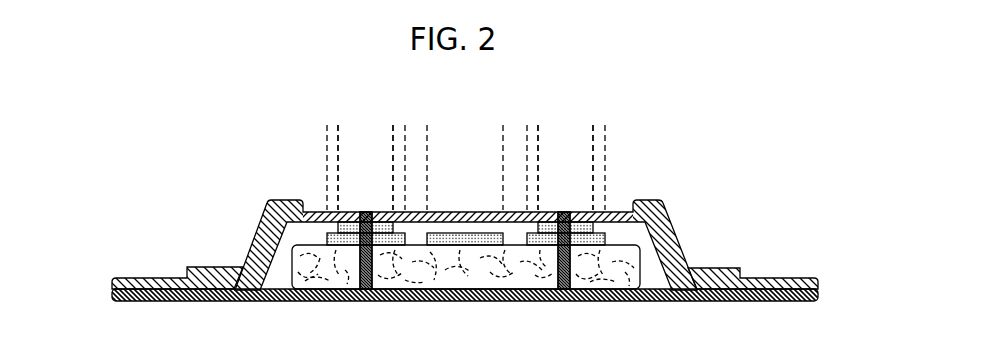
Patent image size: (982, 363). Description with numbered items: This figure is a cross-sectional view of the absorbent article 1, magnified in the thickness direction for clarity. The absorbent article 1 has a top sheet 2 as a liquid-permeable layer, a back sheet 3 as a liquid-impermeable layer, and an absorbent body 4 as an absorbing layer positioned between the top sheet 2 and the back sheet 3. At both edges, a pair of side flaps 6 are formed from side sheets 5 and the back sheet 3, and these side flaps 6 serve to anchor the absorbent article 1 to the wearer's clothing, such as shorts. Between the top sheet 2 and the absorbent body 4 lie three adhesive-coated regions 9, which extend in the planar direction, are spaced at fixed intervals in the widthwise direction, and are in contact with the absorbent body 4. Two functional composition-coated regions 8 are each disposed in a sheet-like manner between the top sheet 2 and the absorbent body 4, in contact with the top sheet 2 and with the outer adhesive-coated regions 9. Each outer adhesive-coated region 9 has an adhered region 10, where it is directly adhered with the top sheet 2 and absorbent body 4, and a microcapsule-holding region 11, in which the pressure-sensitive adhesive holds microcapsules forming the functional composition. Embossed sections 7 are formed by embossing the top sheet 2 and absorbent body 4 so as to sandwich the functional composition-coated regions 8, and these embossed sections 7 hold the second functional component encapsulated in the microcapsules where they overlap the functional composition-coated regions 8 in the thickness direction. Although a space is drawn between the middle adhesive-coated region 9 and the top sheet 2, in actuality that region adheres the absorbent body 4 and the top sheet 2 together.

The absorbent article 1 is at (214, 165).
The top sheet 2 is at (615, 212).
The back sheet 3 is at (782, 300).
The absorbent body 4 is at (633, 267).
The side sheet 5 is at (792, 278).
The side flap 6 is at (126, 258).
The embossed section 7 is at (366, 212).
The functional composition-coated region 8 is at (348, 228).
The adhesive-coated region 9 is at (384, 238).
The adhered region 10 is at (327, 125).
The microcapsule-holding region 11 is at (338, 125).